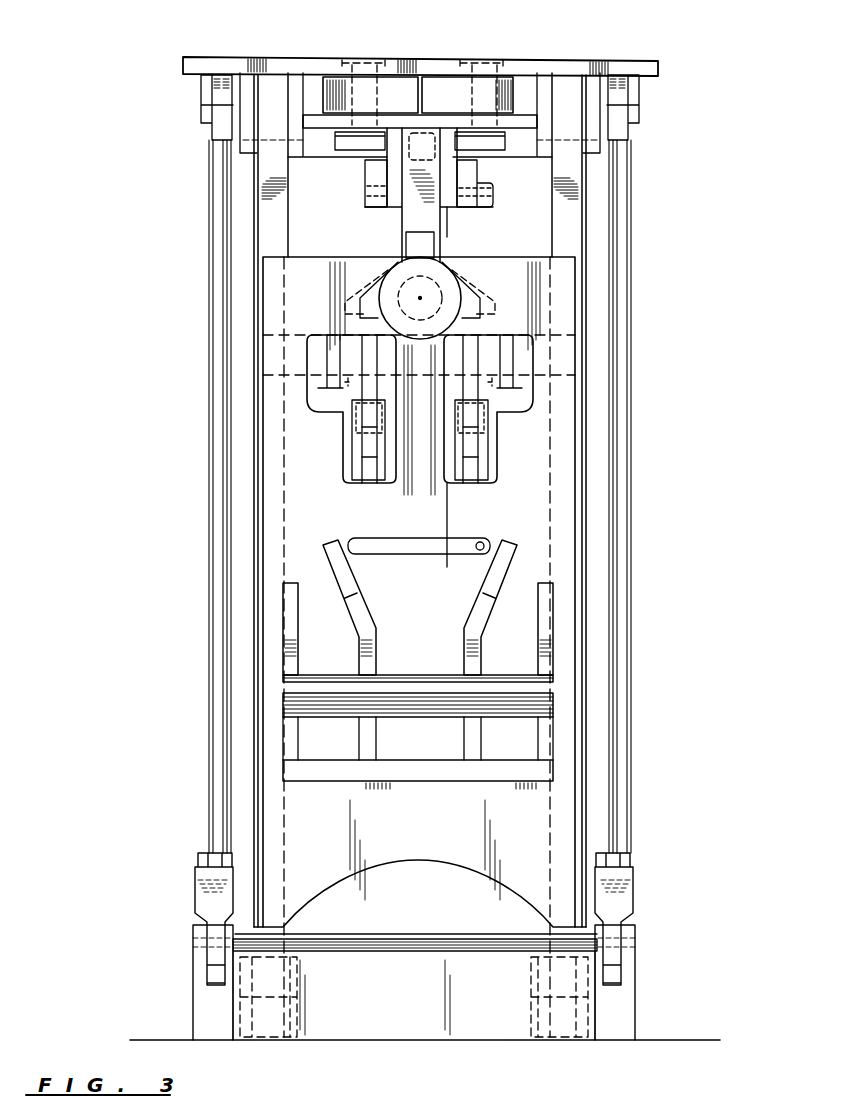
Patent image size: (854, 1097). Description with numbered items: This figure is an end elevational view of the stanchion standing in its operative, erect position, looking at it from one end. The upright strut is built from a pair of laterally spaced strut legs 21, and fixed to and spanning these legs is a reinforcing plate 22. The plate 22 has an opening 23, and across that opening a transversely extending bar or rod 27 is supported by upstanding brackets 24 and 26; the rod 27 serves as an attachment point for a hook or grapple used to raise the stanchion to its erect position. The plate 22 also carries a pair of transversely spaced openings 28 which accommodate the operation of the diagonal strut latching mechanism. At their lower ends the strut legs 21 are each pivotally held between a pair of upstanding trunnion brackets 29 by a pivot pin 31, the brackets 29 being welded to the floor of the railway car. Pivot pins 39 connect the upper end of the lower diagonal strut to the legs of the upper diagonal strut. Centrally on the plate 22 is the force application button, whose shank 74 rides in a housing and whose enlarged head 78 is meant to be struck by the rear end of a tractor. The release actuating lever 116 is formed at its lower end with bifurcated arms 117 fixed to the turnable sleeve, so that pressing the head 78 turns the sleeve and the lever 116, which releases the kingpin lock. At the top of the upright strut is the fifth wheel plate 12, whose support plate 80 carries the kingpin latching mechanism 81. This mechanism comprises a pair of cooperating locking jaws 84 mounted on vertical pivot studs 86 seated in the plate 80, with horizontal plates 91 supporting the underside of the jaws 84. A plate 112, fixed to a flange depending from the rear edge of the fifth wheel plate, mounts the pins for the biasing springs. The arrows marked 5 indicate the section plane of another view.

The section line 5- 5 is at (386, 224).
The fifth wheel plate 12 is at (552, 39).
The strut legs 21 is at (268, 222).
The reinforcing plate 22 is at (563, 824).
The opening 23 is at (483, 545).
The upstanding bracket 24 is at (292, 597).
The upstanding bracket 26 is at (333, 545).
The bar or rod 27 is at (430, 700).
The openings 28 is at (522, 398).
The trunnion brackets 29 is at (243, 1030).
The pivot pin 31 is at (292, 975).
The pivot pins 39 is at (562, 357).
The shank 74 is at (427, 286).
The enlarged head 78 is at (393, 280).
The support plate 80 is at (617, 74).
The kingpin latching mechanism 81 is at (498, 167).
The locking jaws 84 is at (387, 93).
The vertical pivot studs 86 is at (362, 70).
The horizontal plates 91 is at (314, 118).
The plate 112 is at (347, 143).
The release actuating lever 116 is at (410, 165).
The bifurcated arms 117 is at (348, 388).